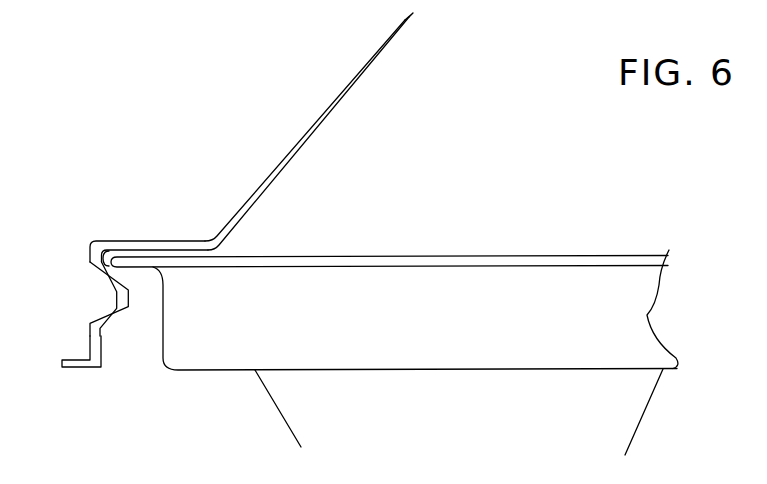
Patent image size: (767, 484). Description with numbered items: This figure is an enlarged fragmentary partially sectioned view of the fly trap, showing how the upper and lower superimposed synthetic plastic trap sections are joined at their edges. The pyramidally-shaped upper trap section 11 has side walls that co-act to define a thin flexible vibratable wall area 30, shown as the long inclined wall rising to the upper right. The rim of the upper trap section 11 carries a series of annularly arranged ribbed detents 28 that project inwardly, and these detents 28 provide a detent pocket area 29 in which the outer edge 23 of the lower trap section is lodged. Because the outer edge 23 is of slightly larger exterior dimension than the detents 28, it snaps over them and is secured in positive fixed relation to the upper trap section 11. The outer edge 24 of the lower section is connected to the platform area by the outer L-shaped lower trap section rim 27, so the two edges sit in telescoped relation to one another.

The upper trap section 11 is at (247, 198).
The outer edge of lower trap section 23 is at (62, 361).
The outer edge of lower section 24 is at (112, 258).
The outer L-shaped lower trap section rim 27 is at (162, 287).
The detents 28 is at (117, 297).
The detent pocket area 29 is at (93, 250).
The thin flexible vibratable wall area 30 is at (346, 95).